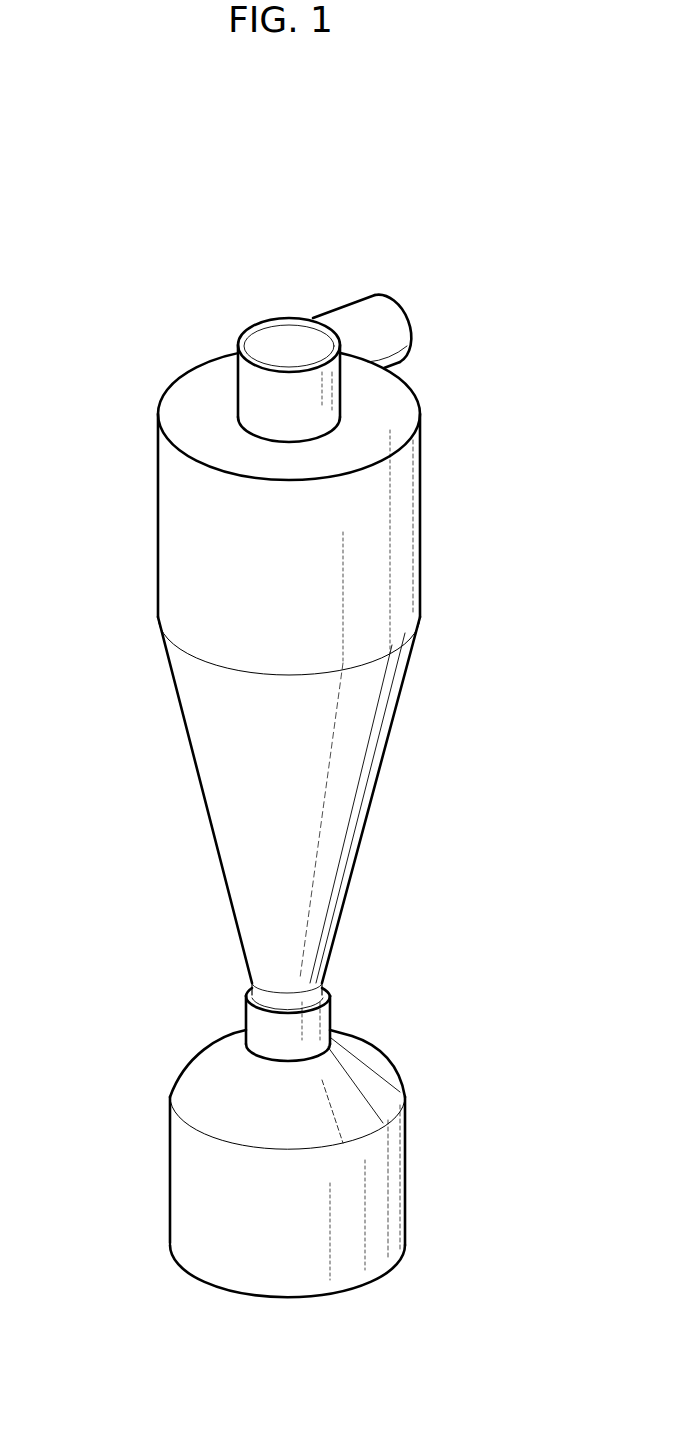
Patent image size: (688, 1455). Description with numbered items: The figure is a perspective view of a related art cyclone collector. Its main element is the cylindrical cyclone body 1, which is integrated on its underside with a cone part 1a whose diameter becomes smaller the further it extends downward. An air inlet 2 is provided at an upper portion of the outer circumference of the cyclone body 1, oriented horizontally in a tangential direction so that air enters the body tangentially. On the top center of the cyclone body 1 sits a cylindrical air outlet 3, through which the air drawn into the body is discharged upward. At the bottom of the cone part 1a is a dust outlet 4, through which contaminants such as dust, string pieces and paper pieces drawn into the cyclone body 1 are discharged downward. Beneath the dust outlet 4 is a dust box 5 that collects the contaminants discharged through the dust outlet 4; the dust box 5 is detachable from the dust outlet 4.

The cyclone body 1 is at (398, 525).
The cone part 1a is at (372, 742).
The air inlet 2 is at (352, 315).
The air outlet 3 is at (247, 389).
The dust outlet 4 is at (263, 995).
The dust box 5 is at (183, 1197).